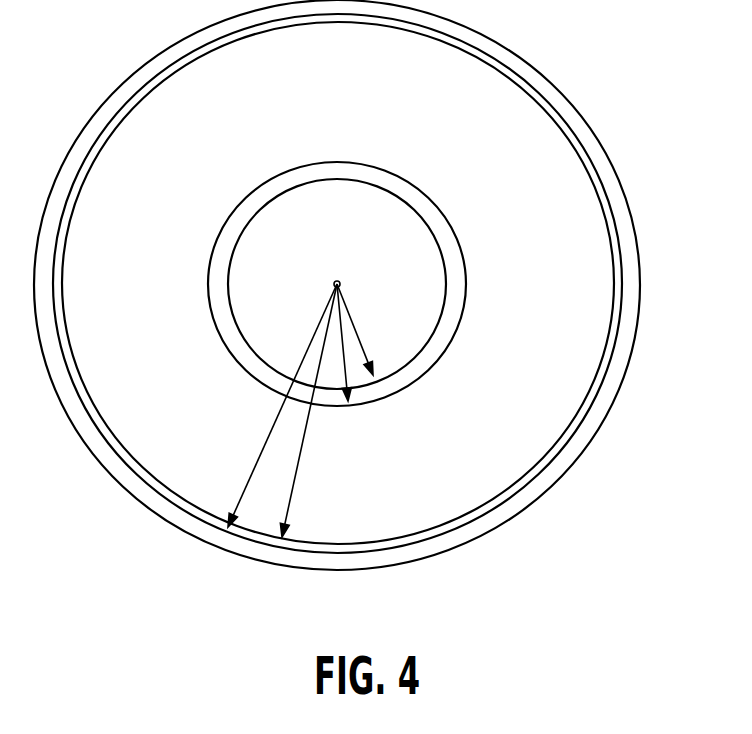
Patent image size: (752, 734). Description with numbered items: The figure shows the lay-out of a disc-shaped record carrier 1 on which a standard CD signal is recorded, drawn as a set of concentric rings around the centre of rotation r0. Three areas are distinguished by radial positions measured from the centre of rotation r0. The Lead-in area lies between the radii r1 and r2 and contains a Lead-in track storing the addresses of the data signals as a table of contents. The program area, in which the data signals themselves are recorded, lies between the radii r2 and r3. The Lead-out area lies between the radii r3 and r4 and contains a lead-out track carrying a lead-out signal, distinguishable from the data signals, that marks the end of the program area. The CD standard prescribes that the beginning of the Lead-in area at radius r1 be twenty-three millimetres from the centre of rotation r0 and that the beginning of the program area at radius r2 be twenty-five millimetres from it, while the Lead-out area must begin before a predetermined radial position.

The record carrier 1 is at (577, 110).
The centre of rotation r0 is at (341, 283).
The radius bounding the beginning of the Lead-in area r1 is at (356, 332).
The radius bounding the Lead-in area and the program area r2 is at (348, 371).
The radius bounding the program area and the Lead-out area r3 is at (300, 465).
The radius bounding the end of the Lead-out area r4 is at (262, 445).